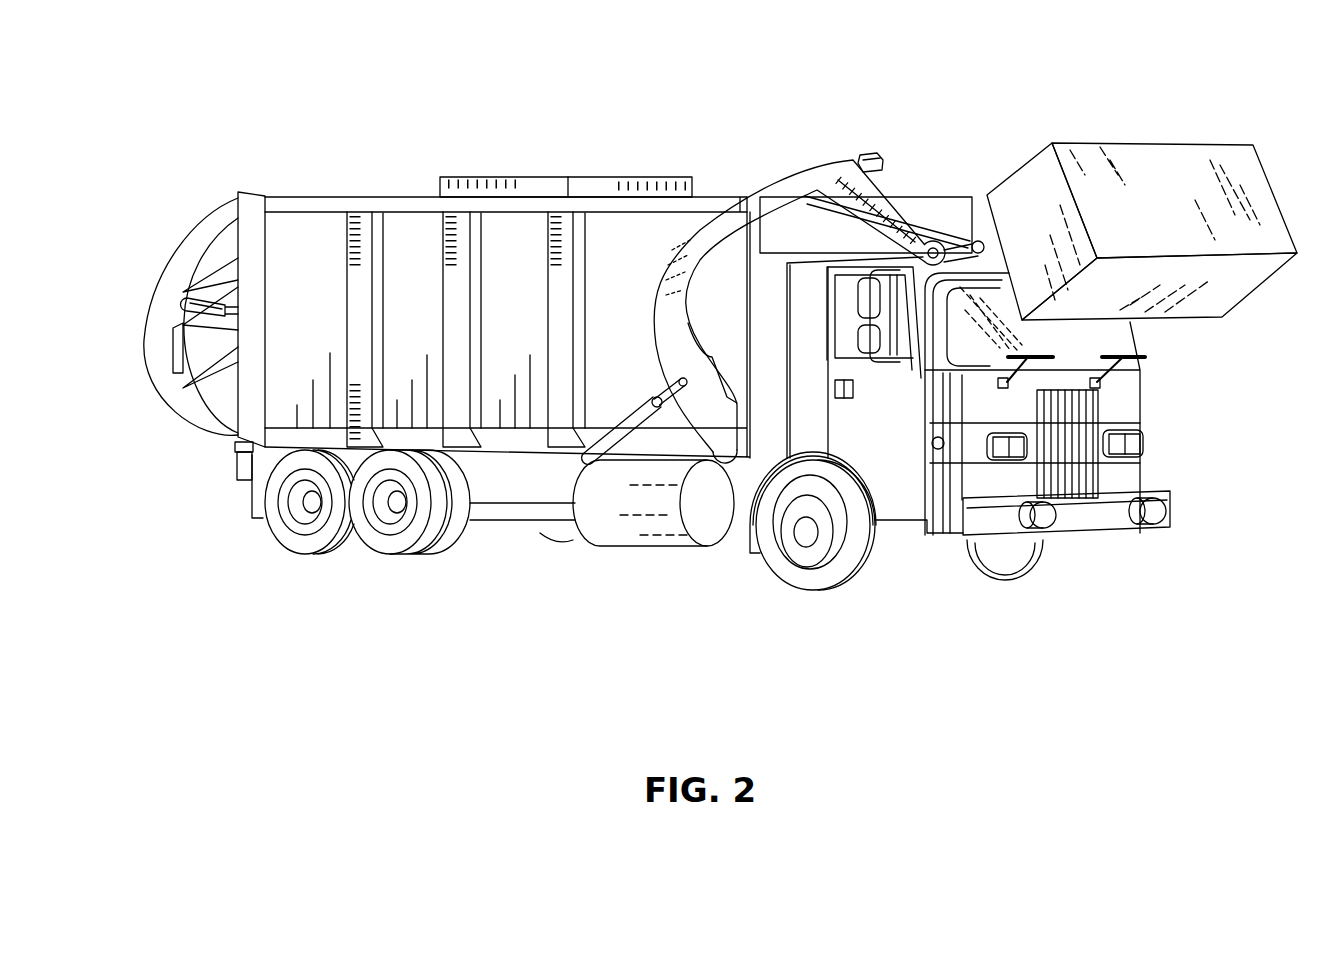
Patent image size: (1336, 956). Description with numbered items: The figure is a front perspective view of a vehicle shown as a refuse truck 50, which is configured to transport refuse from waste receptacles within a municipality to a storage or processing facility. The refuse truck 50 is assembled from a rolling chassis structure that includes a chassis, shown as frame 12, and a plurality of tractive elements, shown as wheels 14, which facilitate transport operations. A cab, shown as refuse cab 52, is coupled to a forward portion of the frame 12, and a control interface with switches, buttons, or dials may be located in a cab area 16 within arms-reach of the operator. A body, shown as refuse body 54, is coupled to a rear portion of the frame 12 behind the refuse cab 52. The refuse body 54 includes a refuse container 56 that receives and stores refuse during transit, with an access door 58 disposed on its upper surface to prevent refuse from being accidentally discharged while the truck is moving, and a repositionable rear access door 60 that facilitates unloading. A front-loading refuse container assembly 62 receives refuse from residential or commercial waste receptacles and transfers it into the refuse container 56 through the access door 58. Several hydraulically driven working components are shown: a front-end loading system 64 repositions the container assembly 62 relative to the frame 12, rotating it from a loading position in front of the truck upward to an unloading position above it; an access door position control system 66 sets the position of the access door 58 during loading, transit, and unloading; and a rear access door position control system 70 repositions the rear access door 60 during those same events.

The refuse truck 50 is at (197, 97).
The frame 12 is at (522, 520).
The wheels 14 is at (385, 545).
The cab area 16 is at (1080, 357).
The refuse cab 52 is at (940, 505).
The refuse body 54 is at (298, 400).
The refuse container 56 is at (312, 240).
The access door 58 is at (518, 185).
The rear access door 60 is at (158, 382).
The front-loading refuse container assembly 62 is at (1250, 172).
The front-end loading system 64 is at (597, 462).
The access door position control system 66 is at (438, 197).
The rear access door position control system 70 is at (182, 300).